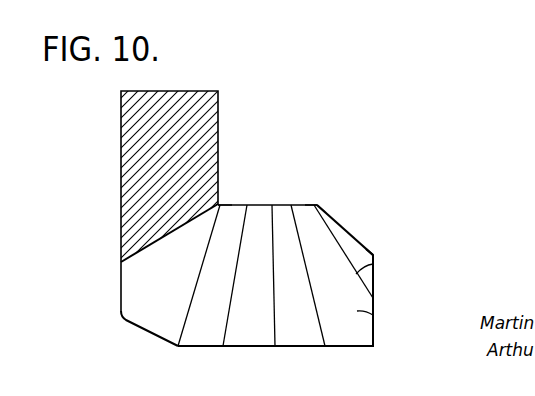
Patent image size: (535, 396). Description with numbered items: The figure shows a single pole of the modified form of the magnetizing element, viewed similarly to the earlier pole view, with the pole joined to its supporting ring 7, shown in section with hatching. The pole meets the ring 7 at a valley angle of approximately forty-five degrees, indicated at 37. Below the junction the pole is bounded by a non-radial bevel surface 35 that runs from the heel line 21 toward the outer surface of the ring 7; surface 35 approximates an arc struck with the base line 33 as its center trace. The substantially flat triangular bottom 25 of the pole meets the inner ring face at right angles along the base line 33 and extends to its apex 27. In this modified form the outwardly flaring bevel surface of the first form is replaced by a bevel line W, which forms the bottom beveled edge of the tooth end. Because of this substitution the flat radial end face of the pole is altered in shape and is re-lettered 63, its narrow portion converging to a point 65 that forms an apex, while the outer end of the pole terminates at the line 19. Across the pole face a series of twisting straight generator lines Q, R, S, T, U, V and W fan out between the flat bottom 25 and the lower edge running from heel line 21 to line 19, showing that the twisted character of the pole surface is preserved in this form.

The supporting ring 7 is at (121, 168).
The line at outer end of radial face 19 is at (373, 346).
The heel line 21 is at (181, 348).
The flat triangular bottom 25 is at (290, 205).
The apex of triangle 27 is at (317, 205).
The base line 33 is at (222, 205).
The bevel surface 35 is at (147, 331).
The valley angle 37 is at (139, 251).
The outer end surface 63 is at (373, 298).
The apex point 65 is at (373, 256).
The twisting straight generator line Q is at (201, 262).
The twisting straight generator line R is at (231, 297).
The twisting straight generator line S is at (273, 292).
The twisting straight generator line T is at (308, 283).
The twisting straight generator line U is at (373, 315).
The twisting straight generator line V is at (374, 267).
The bevel line W is at (346, 230).